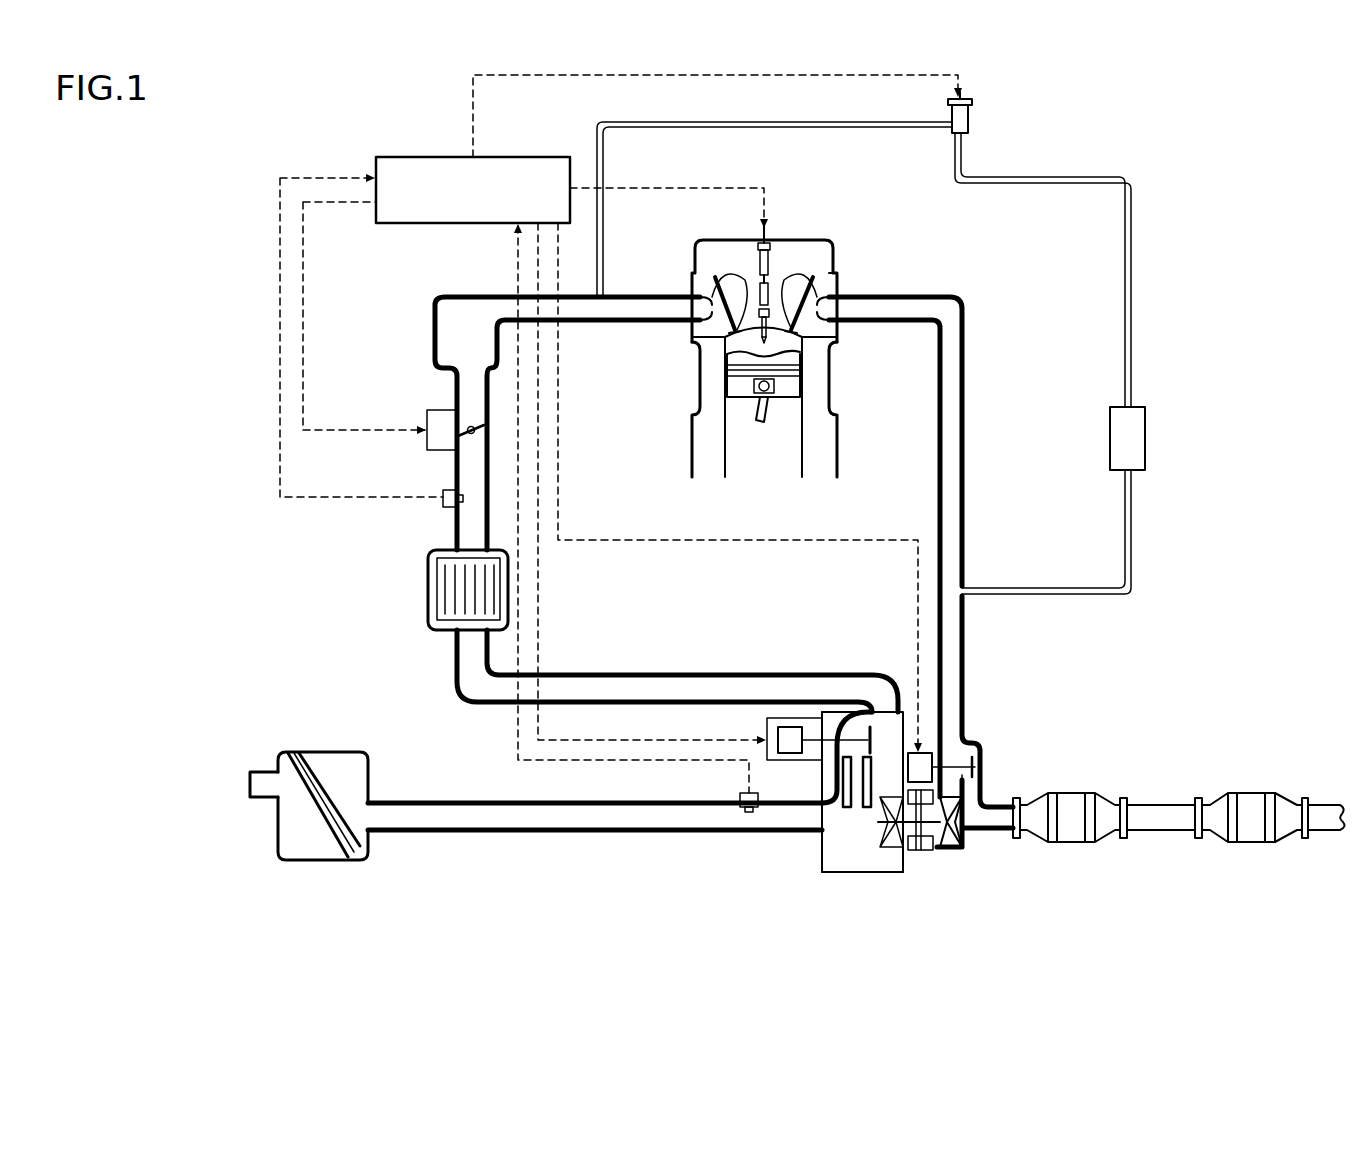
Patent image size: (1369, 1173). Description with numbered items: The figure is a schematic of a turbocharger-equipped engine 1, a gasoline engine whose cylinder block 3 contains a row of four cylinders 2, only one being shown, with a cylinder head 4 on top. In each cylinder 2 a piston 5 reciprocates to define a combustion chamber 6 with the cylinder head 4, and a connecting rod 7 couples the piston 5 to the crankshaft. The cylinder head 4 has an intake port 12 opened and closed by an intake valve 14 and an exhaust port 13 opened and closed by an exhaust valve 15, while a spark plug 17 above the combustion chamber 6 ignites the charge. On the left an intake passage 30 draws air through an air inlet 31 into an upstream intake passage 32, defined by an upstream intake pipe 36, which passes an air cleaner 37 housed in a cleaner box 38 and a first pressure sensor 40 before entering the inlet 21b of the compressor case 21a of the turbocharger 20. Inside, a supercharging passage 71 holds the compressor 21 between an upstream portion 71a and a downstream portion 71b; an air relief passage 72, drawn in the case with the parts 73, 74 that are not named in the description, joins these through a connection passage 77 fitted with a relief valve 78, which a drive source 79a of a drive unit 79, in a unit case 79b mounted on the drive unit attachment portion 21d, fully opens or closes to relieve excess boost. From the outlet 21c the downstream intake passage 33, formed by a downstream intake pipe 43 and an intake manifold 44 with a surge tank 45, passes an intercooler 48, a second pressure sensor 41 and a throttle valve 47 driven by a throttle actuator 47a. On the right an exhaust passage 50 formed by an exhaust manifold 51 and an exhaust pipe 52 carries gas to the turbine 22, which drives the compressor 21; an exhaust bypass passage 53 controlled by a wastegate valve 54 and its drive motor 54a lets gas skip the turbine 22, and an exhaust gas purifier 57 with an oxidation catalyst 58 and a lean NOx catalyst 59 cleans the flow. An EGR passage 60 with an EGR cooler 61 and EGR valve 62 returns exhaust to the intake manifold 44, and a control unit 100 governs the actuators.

The turbocharger-equipped engine 1 is at (766, 308).
The cylinder 2 is at (810, 440).
The cylinder block 3 is at (838, 364).
The cylinder head 4 is at (845, 290).
The piston 5 is at (732, 358).
The combustion chamber 6 is at (790, 378).
The connecting rod 7 is at (755, 403).
The intake port 12 is at (693, 303).
The exhaust port 13 is at (838, 302).
The intake valve 14 is at (716, 276).
The exhaust valve 15 is at (805, 278).
The spark plug 17 is at (779, 252).
The turbocharger 20 is at (973, 783).
The compressor 21 is at (925, 853).
The compressor case 21a is at (908, 725).
The inlet 21b is at (805, 810).
The outlet 21c is at (888, 715).
The drive unit attachment portion 21d is at (817, 725).
The turbine 22 is at (987, 852).
The intake passage 30 is at (511, 805).
The air inlet 31 is at (250, 782).
The upstream intake passage 32 is at (589, 823).
The downstream intake passage 33 is at (477, 700).
The upstream intake pipe 36 is at (412, 832).
The air cleaner 37 is at (330, 752).
The cleaner box 38 is at (357, 752).
The first pressure sensor 40 is at (740, 798).
The second pressure sensor 41 is at (440, 502).
The downstream intake pipe 43 is at (669, 672).
The intake manifold 44 is at (590, 322).
The surge tank 45 is at (433, 319).
The throttle valve 47 is at (455, 427).
The throttle actuator 47a is at (425, 443).
The intercooler 48 is at (428, 585).
The exhaust passage 50 is at (938, 524).
The exhaust manifold 51 is at (923, 294).
The exhaust pipe 52 is at (962, 505).
The exhaust bypass passage 53 is at (980, 790).
The wastegate valve 54 is at (977, 775).
The drive motor 54a is at (962, 765).
The exhaust gas purifier 57 is at (1178, 873).
The oxidation catalyst 58 is at (1070, 843).
The lean NOx catalyst 59 is at (1251, 851).
The EGR passage 60 is at (1130, 315).
The EGR cooler 61 is at (1145, 438).
The EGR valve 62 is at (970, 118).
The supercharging passage 71 is at (808, 772).
The upstream portion 71a is at (845, 815).
The downstream portion 71b is at (866, 830).
The air relief passage 72 is at (758, 832).
The first blade 73 is at (835, 770).
The second blade 74 is at (832, 790).
The connection passage 77 is at (852, 735).
The relief valve 78 is at (935, 752).
The drive unit 79 is at (777, 678).
The drive source 79a is at (783, 727).
The unit case 79b is at (767, 735).
The control unit 100 is at (405, 157).